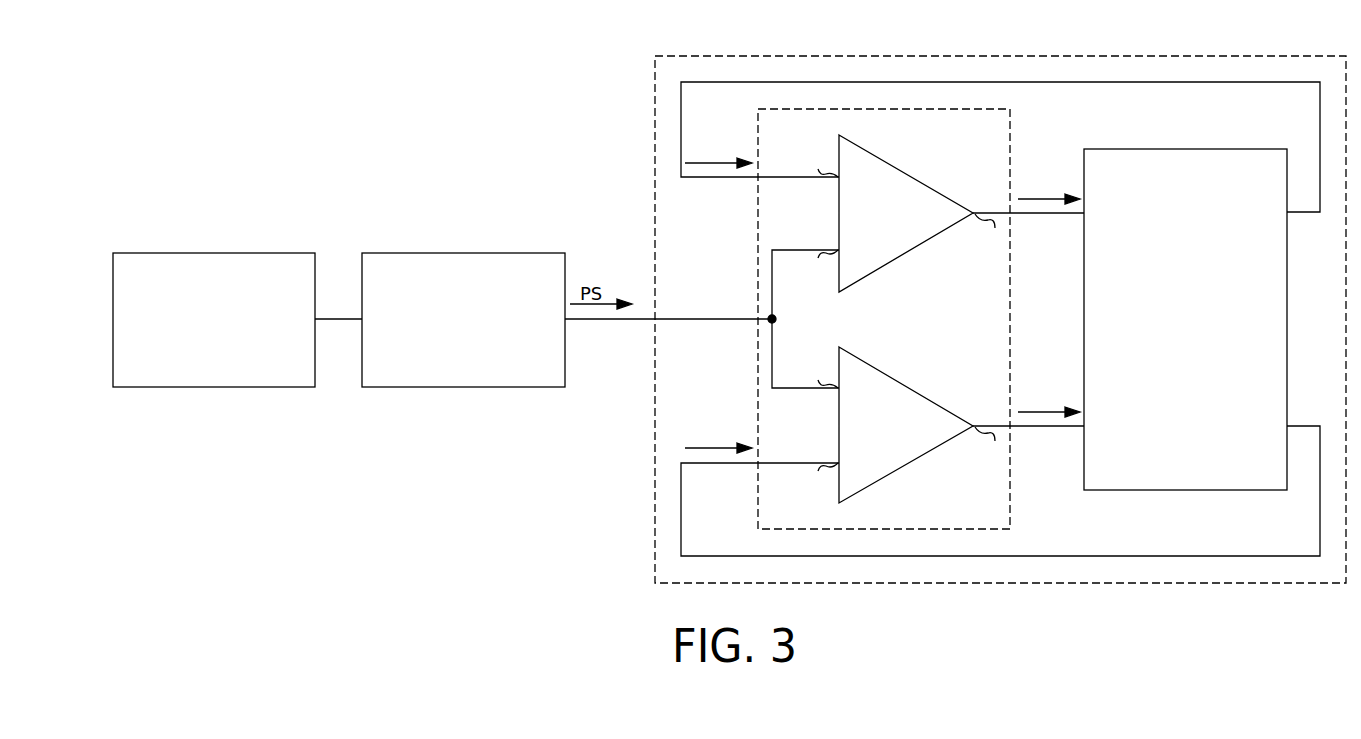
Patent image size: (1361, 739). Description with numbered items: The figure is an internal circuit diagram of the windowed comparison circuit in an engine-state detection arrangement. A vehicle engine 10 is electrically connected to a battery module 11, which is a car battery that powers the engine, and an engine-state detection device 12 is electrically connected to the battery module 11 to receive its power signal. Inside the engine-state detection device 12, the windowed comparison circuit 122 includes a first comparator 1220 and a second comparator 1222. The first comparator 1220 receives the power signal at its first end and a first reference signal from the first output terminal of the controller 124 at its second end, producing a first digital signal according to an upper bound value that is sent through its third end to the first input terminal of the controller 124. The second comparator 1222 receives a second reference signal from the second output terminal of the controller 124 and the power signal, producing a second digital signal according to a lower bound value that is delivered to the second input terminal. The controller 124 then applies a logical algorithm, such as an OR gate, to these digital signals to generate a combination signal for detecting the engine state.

The vehicle engine 10 is at (202, 358).
The battery module 11 is at (451, 358).
The engine-state detection device 12 is at (1310, 56).
The windowed comparison circuit 122 is at (1010, 131).
The first comparator 1220 is at (874, 226).
The second comparator 1222 is at (874, 439).
The controller 124 is at (1167, 345).